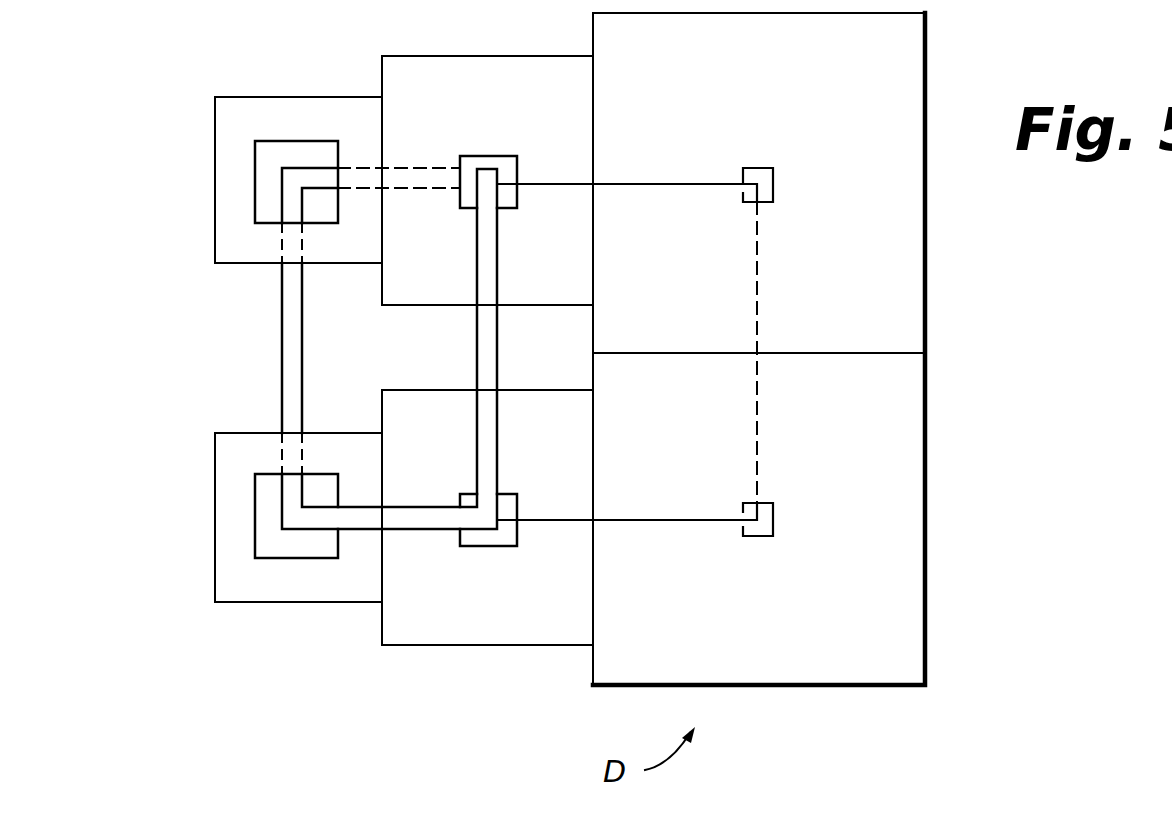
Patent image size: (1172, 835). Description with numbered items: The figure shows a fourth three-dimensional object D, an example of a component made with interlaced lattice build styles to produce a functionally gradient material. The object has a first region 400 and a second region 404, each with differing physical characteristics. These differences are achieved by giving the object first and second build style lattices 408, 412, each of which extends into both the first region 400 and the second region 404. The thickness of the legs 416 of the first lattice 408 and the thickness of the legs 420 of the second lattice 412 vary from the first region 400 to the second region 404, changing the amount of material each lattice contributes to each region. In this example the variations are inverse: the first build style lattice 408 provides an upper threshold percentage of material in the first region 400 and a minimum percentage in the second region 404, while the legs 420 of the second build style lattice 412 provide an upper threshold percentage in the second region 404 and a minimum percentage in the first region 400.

The first region 400 is at (884, 704).
The second region 404 is at (291, 644).
The first build style lattice 408 is at (902, 603).
The second build style lattice 412 is at (282, 337).
The legs of the first lattice 416 is at (217, 514).
The legs of the second lattice 420 is at (428, 513).